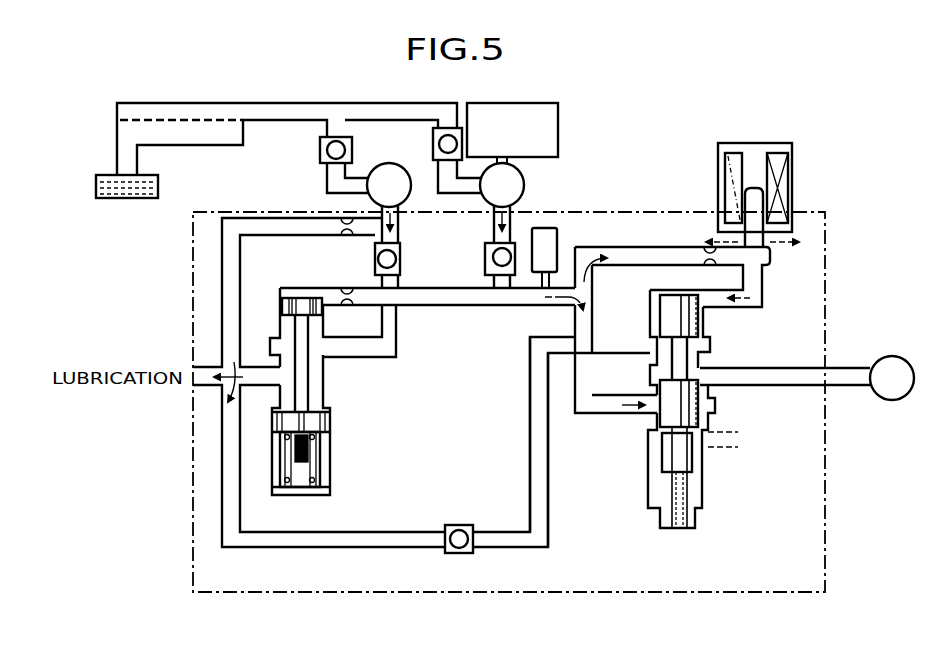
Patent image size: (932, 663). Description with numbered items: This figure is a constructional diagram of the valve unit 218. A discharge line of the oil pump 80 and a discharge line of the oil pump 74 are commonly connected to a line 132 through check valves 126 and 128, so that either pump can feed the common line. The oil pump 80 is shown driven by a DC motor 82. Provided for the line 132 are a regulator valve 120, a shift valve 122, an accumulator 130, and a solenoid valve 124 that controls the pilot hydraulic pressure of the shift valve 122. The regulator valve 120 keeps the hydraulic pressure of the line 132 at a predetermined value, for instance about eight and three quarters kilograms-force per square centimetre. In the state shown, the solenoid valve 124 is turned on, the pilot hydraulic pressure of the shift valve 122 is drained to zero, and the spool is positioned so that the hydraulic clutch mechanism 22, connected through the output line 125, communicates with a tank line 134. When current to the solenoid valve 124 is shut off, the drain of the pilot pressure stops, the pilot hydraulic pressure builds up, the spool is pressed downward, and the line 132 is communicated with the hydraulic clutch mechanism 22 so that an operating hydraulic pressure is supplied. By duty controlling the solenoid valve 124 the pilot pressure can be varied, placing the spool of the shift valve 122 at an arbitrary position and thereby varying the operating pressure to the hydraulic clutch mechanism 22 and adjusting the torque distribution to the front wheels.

The hydraulic clutch mechanism 22 is at (895, 357).
The oil pump 74 is at (413, 197).
The oil pump 80 is at (528, 179).
The DC motor 82 is at (562, 108).
The regulator valve 120 is at (343, 464).
The shift valve 122 is at (716, 476).
The solenoid valve 124 is at (770, 142).
The output line to clutch 125 is at (852, 390).
The check valve 126 is at (485, 262).
The check valve 128 is at (375, 258).
The accumulator 130 is at (566, 241).
The line 132 is at (460, 306).
The tank line 134 is at (555, 471).
The valve unit 218 is at (382, 594).